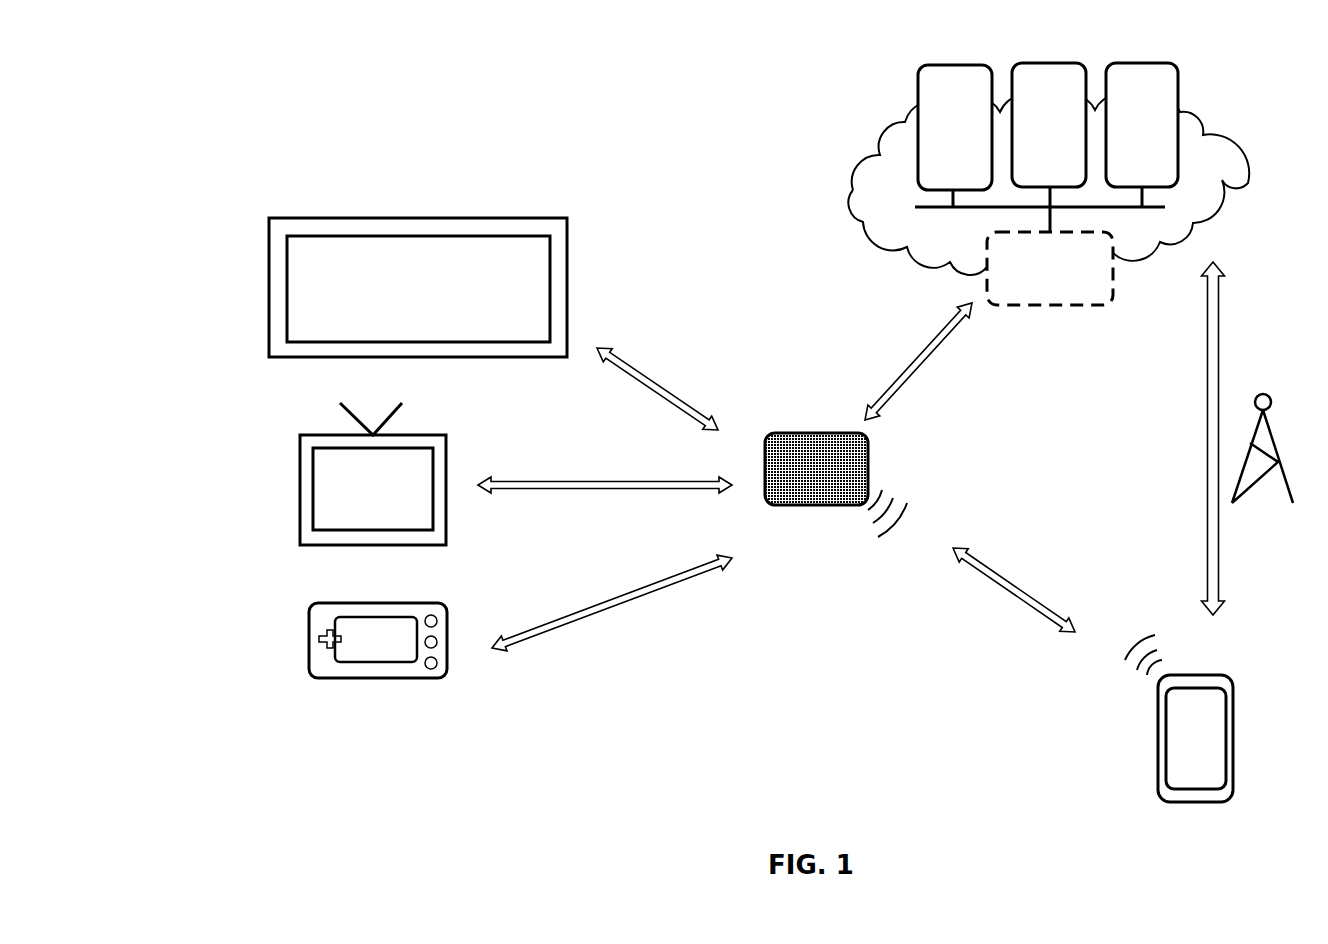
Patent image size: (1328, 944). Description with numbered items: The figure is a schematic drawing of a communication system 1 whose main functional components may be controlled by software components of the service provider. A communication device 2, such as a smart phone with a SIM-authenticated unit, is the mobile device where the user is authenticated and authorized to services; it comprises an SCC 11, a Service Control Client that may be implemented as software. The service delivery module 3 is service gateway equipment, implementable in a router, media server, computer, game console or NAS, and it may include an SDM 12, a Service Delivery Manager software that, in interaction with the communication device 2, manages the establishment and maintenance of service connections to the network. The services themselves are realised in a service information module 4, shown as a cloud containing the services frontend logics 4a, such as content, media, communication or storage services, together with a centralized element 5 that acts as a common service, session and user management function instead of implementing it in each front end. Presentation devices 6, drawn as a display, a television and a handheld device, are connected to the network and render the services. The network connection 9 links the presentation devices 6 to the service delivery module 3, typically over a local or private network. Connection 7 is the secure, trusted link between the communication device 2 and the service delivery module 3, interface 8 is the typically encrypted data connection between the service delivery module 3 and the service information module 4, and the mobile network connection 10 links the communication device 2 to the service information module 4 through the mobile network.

The communication system 1 is at (648, 165).
The communication device 2 is at (1167, 723).
The service delivery module 3 is at (836, 511).
The service information module 4 is at (885, 82).
The services frontend logics 4a is at (1046, 130).
The centralized element 5 is at (1050, 268).
The presentation devices 6 is at (399, 448).
The connection between communication device and service delivery module 7 is at (1014, 590).
The interface between service delivery module and service information module 8 is at (918, 361).
The network connection to presentation devices 9 is at (605, 499).
The mobile network connection 10 is at (1224, 438).
The SCC (Service Control Client) 11 is at (1192, 738).
The SDM (Service Delivery Manager) 12 is at (808, 478).